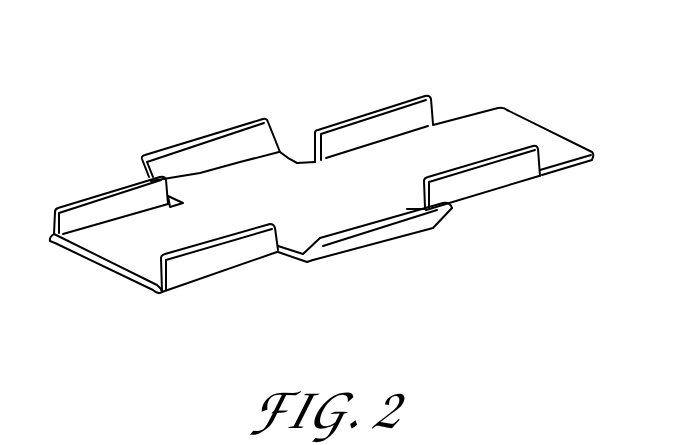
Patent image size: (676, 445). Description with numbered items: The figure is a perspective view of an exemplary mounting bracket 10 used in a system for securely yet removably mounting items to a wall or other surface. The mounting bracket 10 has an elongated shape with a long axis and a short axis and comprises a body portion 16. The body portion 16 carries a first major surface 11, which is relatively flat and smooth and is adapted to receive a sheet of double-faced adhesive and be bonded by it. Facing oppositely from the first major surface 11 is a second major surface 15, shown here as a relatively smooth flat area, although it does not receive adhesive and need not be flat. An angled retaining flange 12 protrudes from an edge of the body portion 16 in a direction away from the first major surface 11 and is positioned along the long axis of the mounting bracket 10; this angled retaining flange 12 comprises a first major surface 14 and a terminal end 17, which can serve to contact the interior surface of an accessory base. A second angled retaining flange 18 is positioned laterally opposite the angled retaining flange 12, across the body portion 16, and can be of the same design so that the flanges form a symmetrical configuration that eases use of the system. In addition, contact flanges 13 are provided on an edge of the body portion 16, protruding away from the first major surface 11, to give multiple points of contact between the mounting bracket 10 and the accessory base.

The mounting bracket 10 is at (113, 62).
The first major surface 11 is at (566, 166).
The angled retaining flange 12 is at (338, 252).
The contact flange 13 is at (373, 113).
The first major surface of angled retaining flange 14 is at (387, 234).
The second major surface 15 is at (486, 127).
The body portion 16 is at (264, 195).
The terminal end 17 is at (358, 233).
The second angled retaining flange 18 is at (198, 137).